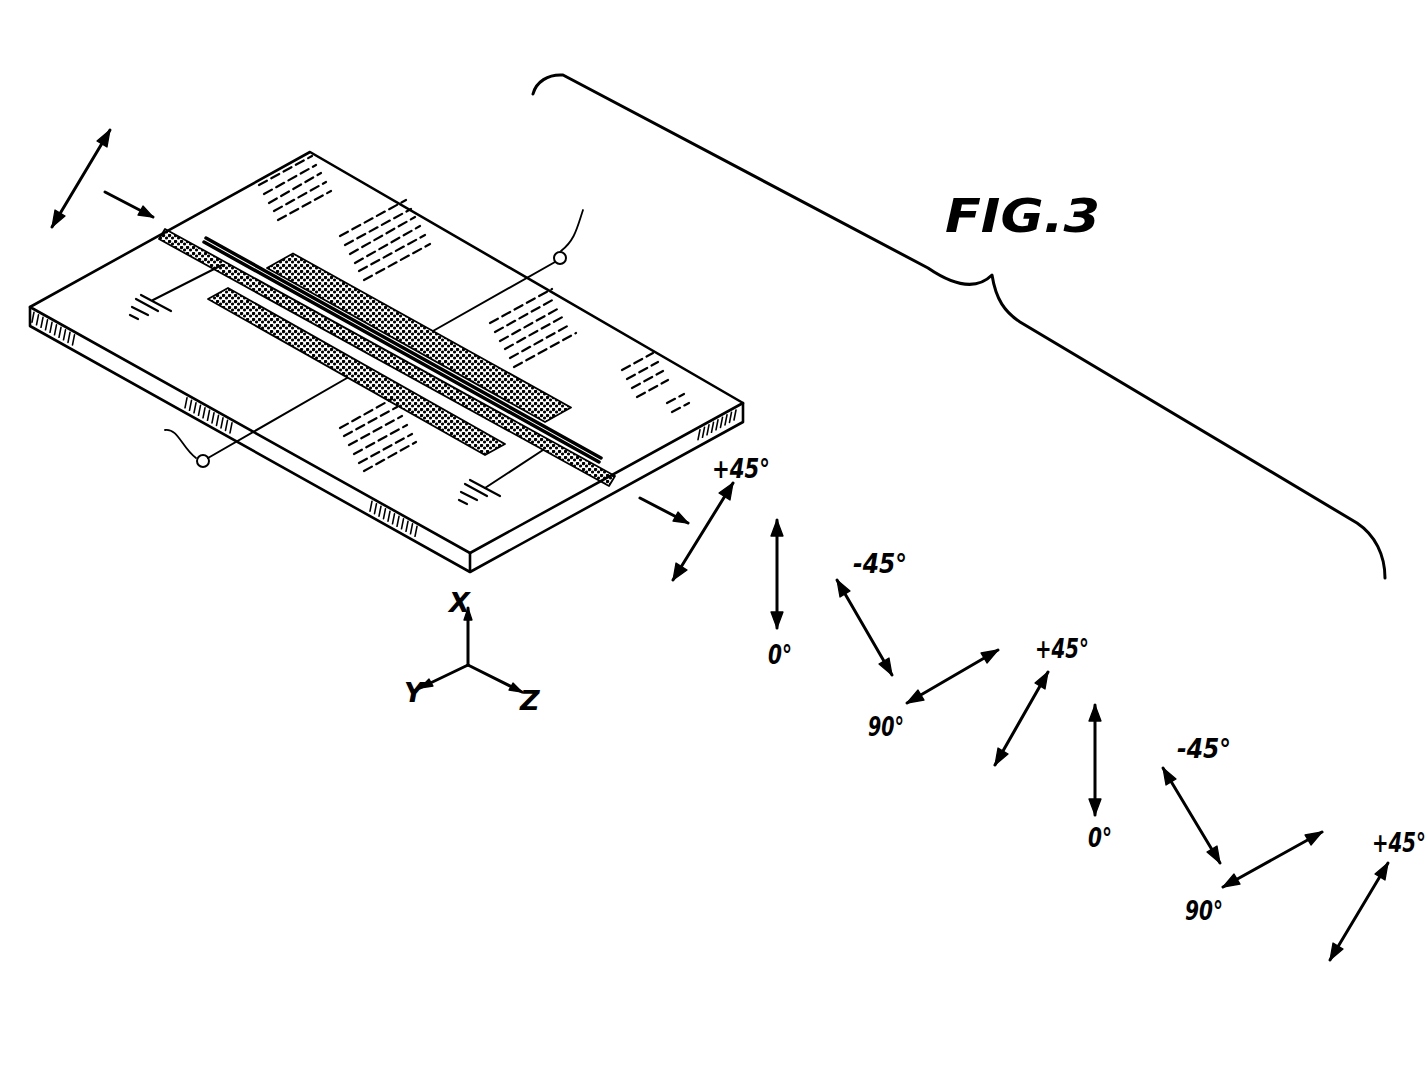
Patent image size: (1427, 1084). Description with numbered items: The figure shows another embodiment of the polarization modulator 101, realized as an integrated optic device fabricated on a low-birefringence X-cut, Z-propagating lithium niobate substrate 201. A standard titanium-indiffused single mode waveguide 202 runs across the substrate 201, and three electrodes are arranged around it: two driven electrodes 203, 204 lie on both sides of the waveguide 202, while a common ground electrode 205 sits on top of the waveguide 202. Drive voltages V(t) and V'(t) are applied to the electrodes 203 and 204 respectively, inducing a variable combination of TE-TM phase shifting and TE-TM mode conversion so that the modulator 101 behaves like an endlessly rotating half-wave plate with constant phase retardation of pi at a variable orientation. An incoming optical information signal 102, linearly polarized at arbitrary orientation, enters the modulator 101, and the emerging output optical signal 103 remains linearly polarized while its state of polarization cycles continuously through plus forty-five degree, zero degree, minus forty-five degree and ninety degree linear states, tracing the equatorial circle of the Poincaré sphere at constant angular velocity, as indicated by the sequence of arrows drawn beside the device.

The polarization modulator 101 is at (738, 326).
The incoming optical information signal 102 is at (120, 193).
The output optical signal 103 is at (643, 500).
The substrate 201 is at (718, 388).
The waveguide 202 is at (593, 462).
The electrode 203 is at (545, 392).
The electrode 204 is at (450, 442).
The common ground electrode 205 is at (260, 270).